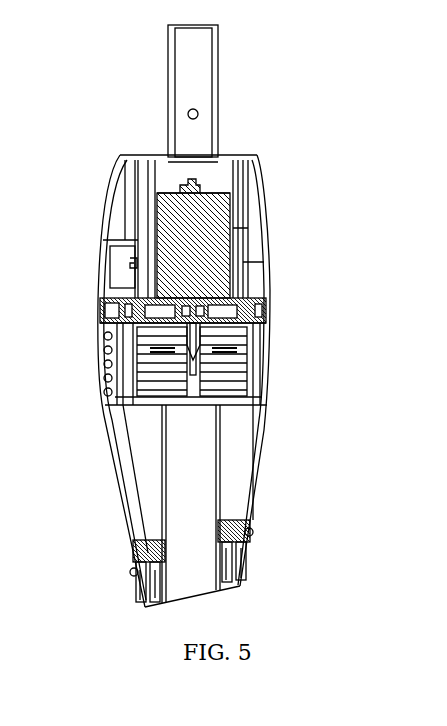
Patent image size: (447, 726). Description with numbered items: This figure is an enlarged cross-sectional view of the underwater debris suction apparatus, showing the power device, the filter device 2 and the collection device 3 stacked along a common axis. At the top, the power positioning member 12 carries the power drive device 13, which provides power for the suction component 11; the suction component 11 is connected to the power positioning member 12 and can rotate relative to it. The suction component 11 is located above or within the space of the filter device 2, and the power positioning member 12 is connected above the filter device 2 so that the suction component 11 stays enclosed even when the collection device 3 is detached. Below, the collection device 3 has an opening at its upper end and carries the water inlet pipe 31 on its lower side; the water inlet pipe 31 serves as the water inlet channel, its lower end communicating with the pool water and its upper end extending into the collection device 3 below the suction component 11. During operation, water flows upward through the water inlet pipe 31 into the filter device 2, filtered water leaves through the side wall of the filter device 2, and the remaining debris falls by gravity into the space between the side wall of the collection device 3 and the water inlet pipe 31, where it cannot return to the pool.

The power positioning member 12 is at (265, 207).
The power drive device 13 is at (215, 265).
The suction component 11 is at (233, 345).
The filter device 2 is at (233, 373).
The collection device 3 is at (265, 450).
The water inlet pipe 31 is at (197, 480).